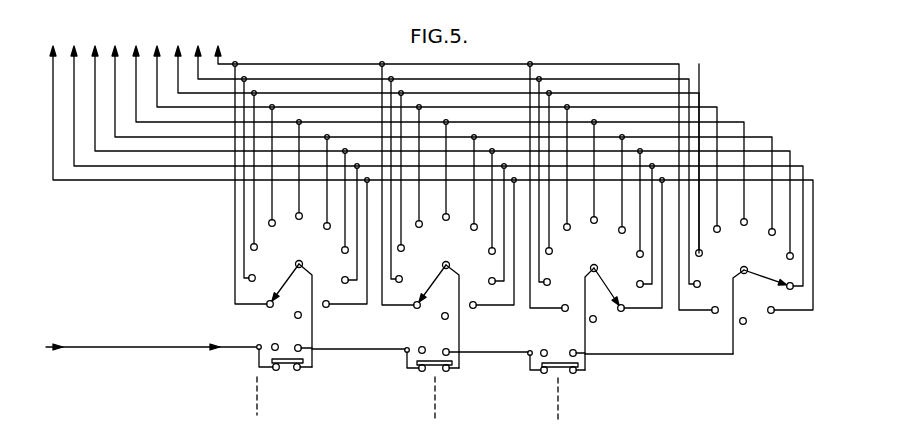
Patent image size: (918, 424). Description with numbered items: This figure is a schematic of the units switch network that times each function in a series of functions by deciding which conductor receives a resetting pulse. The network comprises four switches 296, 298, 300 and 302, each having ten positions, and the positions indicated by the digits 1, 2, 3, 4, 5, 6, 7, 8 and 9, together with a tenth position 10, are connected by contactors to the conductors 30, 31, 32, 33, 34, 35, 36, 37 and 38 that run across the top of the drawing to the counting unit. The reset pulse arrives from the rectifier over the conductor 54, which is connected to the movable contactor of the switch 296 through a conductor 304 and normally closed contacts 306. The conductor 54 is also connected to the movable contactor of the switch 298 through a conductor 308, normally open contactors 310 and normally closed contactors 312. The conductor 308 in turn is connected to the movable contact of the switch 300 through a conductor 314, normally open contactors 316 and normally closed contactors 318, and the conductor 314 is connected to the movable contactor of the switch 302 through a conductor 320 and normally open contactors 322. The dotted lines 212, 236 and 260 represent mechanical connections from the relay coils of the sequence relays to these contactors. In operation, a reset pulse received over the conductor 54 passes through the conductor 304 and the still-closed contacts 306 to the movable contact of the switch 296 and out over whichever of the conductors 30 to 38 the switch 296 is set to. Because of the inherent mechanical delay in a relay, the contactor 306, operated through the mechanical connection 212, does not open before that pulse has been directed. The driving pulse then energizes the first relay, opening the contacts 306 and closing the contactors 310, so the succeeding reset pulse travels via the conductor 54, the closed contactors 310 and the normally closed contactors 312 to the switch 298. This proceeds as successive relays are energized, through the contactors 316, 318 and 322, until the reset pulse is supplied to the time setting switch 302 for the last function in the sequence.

The conductor 30 is at (53, 46).
The conductor 31 is at (75, 46).
The conductor 32 is at (96, 46).
The conductor 33 is at (116, 46).
The conductor 34 is at (137, 46).
The conductor 35 is at (158, 46).
The conductor 36 is at (179, 46).
The conductor 37 is at (199, 46).
The conductor 38 is at (221, 49).
The conductor 54 is at (187, 344).
The switch position 1 is at (498, 309).
The switch position 2 is at (480, 283).
The switch position 3 is at (482, 248).
The switch position 4 is at (498, 230).
The switch position 5 is at (522, 222).
The switch position 6 is at (548, 229).
The switch position 7 is at (564, 257).
The switch position 8 is at (566, 287).
The switch position 9 is at (547, 299).
The switch position 10 is at (521, 315).
The switch 296 is at (289, 277).
The switch 298 is at (436, 278).
The switch 300 is at (606, 284).
The switch 302 is at (759, 274).
The conductor 304 is at (259, 361).
The normally closed contacts 306 is at (299, 371).
The conductor 308 is at (355, 348).
The normally open contactors 310 is at (277, 343).
The normally closed contactors 312 is at (448, 372).
The conductor 314 is at (489, 350).
The normally open contactors 316 is at (421, 346).
The normally closed contactors 318 is at (575, 374).
The conductor 320 is at (733, 354).
The normally open contactors 322 is at (544, 349).
The mechanical connection 212 is at (257, 398).
The mechanical connection 236 is at (436, 407).
The mechanical connection 260 is at (560, 415).